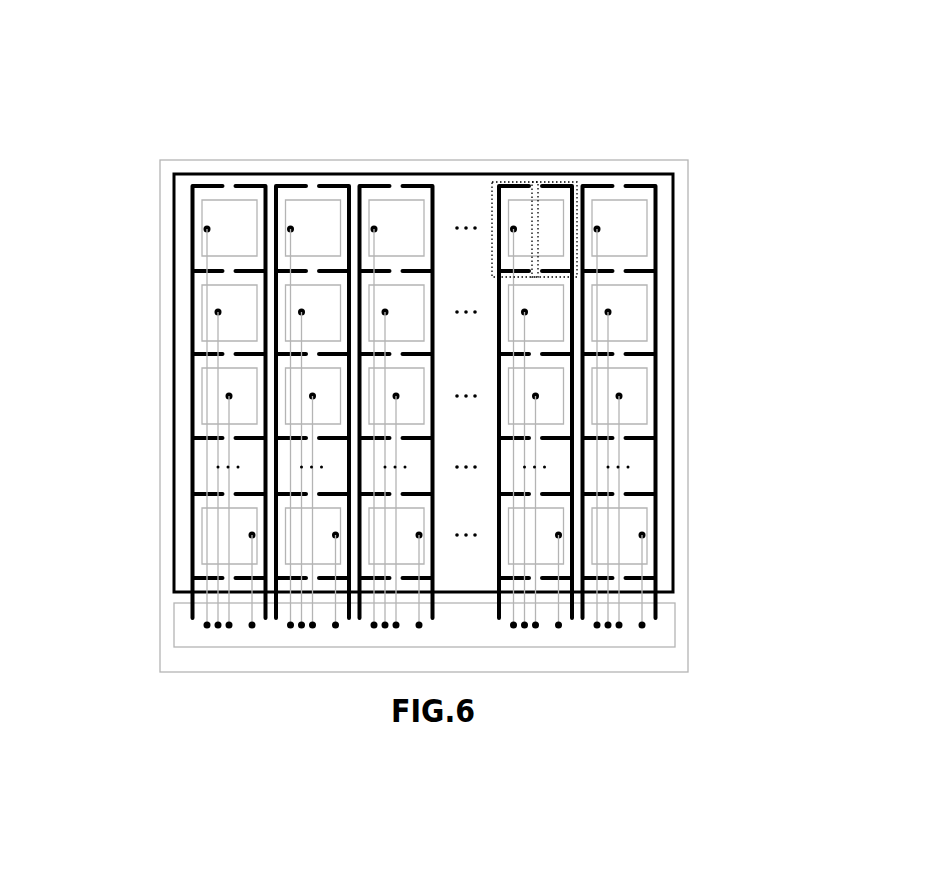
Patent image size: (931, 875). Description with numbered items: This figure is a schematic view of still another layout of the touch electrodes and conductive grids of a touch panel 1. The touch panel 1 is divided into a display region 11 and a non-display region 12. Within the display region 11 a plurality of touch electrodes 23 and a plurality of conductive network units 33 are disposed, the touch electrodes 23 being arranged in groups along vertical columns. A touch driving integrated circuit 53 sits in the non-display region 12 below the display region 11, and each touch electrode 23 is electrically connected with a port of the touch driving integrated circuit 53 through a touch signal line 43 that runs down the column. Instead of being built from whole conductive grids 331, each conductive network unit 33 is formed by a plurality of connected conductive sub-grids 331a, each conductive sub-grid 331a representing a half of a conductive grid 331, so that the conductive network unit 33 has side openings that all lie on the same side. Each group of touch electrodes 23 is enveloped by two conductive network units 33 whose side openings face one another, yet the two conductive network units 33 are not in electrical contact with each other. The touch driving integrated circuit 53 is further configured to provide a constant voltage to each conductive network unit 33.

The display panel 1 is at (692, 400).
The display region 11 is at (680, 497).
The non-display region 12 is at (680, 598).
The touch electrode 23 is at (400, 186).
The conductive network unit 33 is at (217, 186).
The conductive grid 331 is at (568, 150).
The conductive sub-grid 331a is at (515, 186).
The touch signal line 43 is at (205, 468).
The touch driving integrated circuit 53 is at (174, 642).